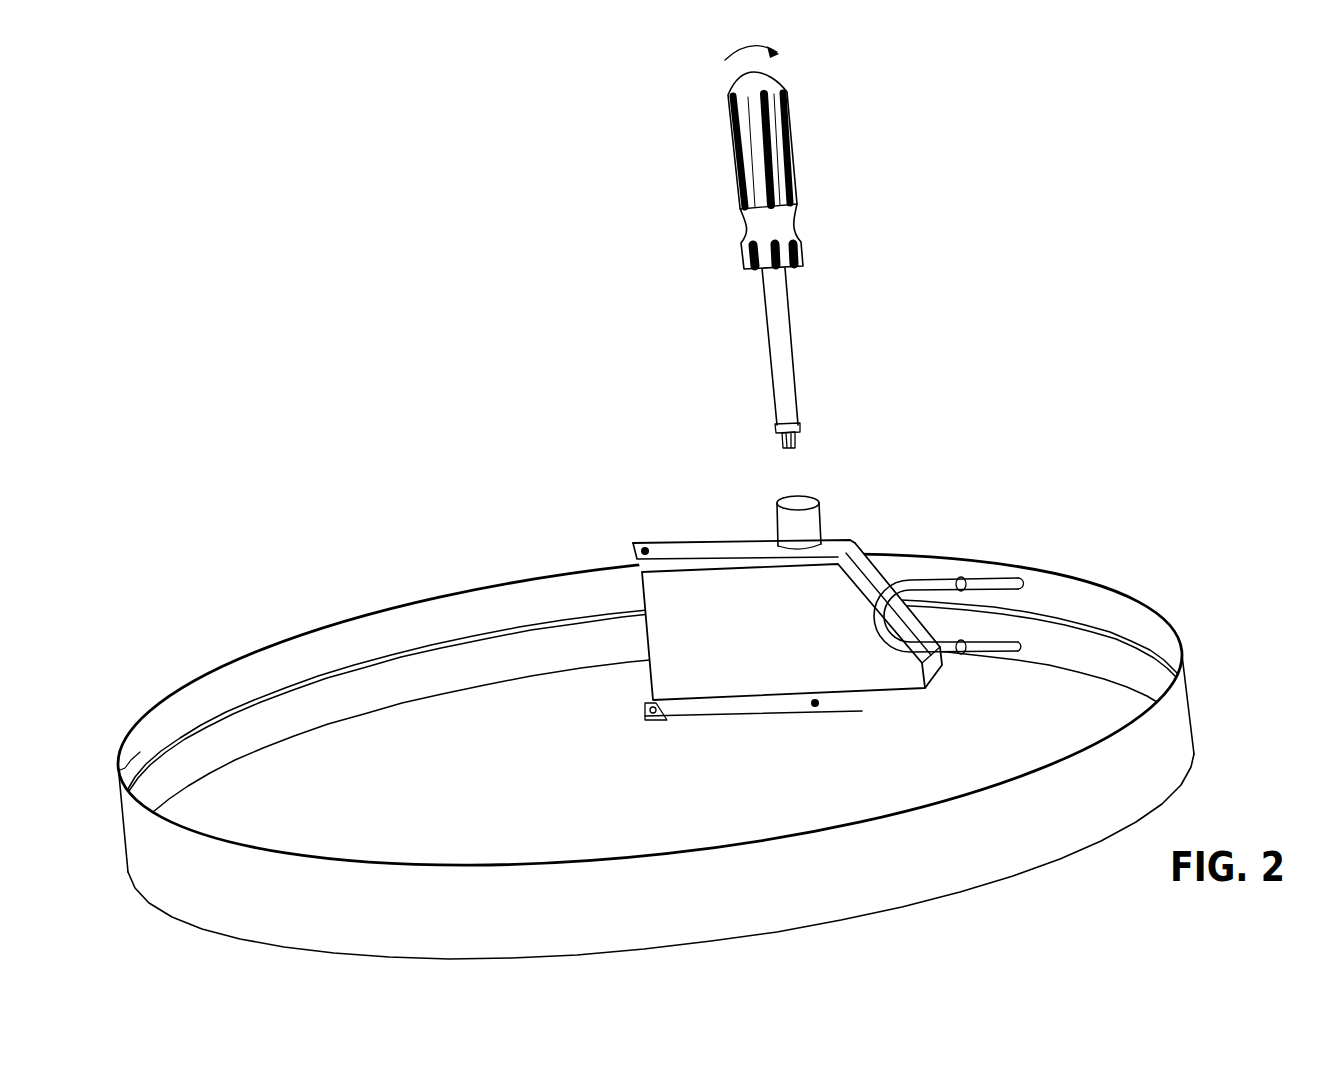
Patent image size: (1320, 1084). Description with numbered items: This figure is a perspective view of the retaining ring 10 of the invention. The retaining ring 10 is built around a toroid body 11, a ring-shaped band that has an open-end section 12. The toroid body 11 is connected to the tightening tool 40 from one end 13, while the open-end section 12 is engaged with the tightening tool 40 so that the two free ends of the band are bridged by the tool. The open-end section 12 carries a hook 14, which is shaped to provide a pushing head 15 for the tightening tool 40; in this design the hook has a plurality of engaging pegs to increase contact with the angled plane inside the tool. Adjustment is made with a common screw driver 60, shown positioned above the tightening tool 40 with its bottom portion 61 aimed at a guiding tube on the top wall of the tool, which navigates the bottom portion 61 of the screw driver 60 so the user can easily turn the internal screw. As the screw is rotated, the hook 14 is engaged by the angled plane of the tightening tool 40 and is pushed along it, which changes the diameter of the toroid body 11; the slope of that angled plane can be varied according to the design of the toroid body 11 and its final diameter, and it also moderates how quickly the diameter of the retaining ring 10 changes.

The retaining ring 10 is at (548, 472).
The toroid body 11 is at (275, 672).
The open-end section 12 is at (883, 565).
The end 13 is at (621, 648).
The hook 14 is at (989, 645).
The pushing head 15 is at (880, 608).
The tightening tool 40 is at (690, 548).
The screw driver 60 is at (780, 222).
The bottom portion 61 is at (797, 437).